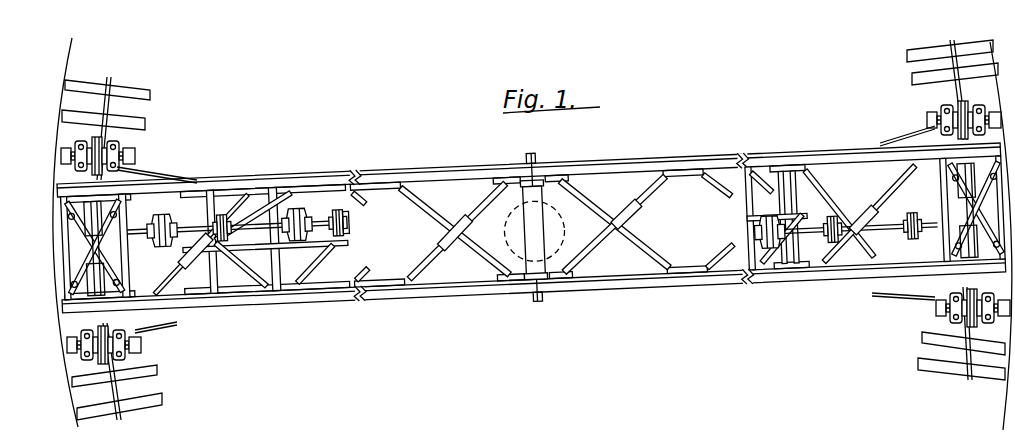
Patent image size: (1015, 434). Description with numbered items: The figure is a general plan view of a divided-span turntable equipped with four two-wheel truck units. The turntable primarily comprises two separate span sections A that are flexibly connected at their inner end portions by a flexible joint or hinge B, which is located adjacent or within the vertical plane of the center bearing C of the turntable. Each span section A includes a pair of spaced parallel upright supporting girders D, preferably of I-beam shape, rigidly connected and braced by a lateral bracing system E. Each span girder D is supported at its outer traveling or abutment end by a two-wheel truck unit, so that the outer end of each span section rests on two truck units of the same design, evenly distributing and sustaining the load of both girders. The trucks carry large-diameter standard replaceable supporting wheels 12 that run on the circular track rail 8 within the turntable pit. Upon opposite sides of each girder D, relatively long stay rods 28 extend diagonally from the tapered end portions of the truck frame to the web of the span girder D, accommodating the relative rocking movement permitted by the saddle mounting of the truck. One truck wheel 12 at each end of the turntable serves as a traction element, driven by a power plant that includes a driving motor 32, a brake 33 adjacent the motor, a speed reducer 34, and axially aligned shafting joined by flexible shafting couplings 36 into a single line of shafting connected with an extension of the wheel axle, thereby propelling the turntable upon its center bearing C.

The circular track rail 8 is at (106, 108).
The supporting wheels 12 is at (110, 142).
The stay rods 28 is at (168, 203).
The driving motor 32 is at (296, 238).
The brake 33 is at (348, 226).
The speed reducer 34 is at (876, 256).
The flexible shafting couplings 36 is at (226, 240).
The span sections A is at (565, 225).
The flexible joint B is at (531, 232).
The center bearing C is at (558, 229).
The supporting girders D is at (350, 172).
The lateral bracing system E is at (432, 230).